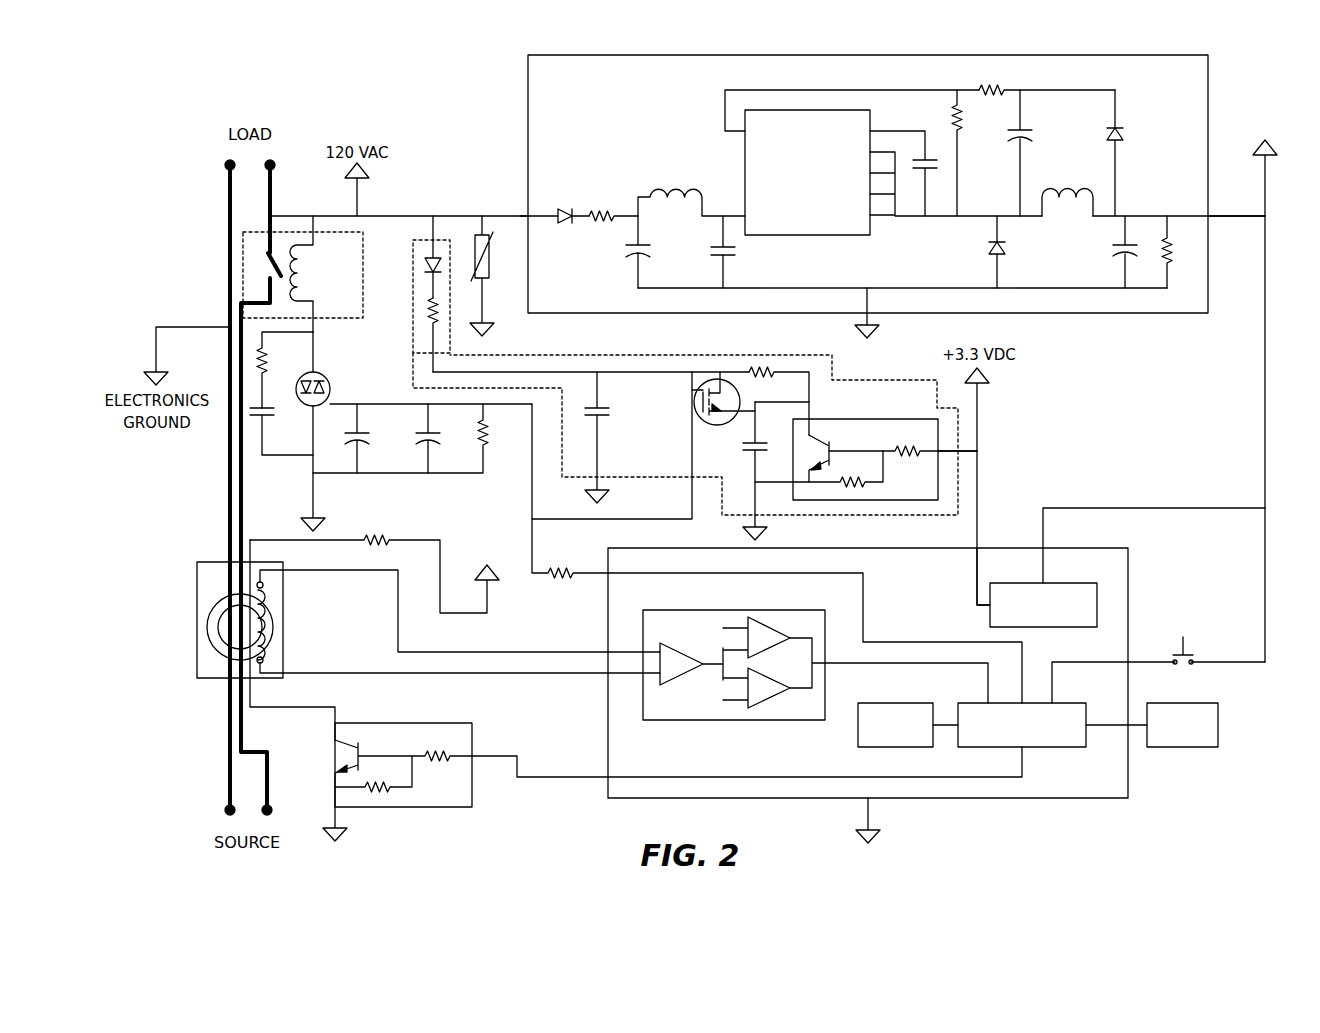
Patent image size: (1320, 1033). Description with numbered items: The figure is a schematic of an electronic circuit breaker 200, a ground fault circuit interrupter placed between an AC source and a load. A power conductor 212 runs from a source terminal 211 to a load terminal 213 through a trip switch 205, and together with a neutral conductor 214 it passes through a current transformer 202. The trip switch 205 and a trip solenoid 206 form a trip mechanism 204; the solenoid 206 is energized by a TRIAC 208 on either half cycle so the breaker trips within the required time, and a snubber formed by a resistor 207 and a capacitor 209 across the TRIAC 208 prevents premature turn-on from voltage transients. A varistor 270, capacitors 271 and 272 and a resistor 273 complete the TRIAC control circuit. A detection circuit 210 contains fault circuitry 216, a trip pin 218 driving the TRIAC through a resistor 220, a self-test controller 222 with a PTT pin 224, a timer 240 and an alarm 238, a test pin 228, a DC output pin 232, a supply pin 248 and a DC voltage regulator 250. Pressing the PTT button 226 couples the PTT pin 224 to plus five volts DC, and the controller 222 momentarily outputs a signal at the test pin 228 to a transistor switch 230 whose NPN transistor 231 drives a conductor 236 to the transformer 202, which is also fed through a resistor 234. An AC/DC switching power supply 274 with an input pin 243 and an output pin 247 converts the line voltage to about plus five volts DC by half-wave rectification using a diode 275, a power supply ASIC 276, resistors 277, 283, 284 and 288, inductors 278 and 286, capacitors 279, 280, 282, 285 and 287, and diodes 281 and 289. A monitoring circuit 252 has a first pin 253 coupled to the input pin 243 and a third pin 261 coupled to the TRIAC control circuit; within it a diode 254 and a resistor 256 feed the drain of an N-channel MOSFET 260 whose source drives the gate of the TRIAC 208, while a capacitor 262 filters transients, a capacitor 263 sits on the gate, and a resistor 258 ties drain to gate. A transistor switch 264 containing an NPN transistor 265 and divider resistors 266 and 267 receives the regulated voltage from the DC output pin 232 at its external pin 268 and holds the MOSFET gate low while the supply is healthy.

The electronic circuit breaker 200 is at (428, 90).
The current transformer 202 is at (285, 600).
The trip mechanism 204 is at (335, 320).
The trip switch 205 is at (268, 266).
The trip solenoid 206 is at (305, 270).
The resistor 207 is at (272, 370).
The TRIAC 208 is at (330, 378).
The capacitor 209 is at (275, 413).
The detection circuit 210 is at (608, 700).
The source terminal 211 is at (272, 810).
The power conductor 212 is at (243, 488).
The load terminal 213 is at (276, 166).
The neutral conductor 214 is at (229, 488).
The fault circuitry 216 is at (716, 610).
The trip pin 218 is at (608, 580).
The resistor 220 is at (566, 566).
The self-test controller 222 is at (1040, 747).
The PTT pin 224 is at (1126, 660).
The PTT button 226 is at (1178, 635).
The test pin 228 is at (608, 777).
The transistor switch 230 is at (376, 723).
The NPN transistor 231 is at (340, 760).
The DC output pin 232 is at (978, 550).
The resistor 234 is at (386, 538).
The conductor 236 is at (292, 712).
The alarm 238 is at (1160, 747).
The timer 240 is at (918, 703).
The input pin 243 is at (528, 214).
The output pin 247 is at (1210, 215).
The supply pin 248 is at (1044, 550).
The DC voltage regulator 250 is at (1097, 595).
The monitoring circuit 252 is at (853, 380).
The first pin 253 is at (435, 240).
The diode 254 is at (424, 260).
The resistor 256 is at (426, 305).
The resistor 258 is at (765, 368).
The N-channel MOSFET 260 is at (694, 405).
The third pin 261 is at (690, 480).
The capacitor 262 is at (607, 418).
The capacitor 263 is at (745, 450).
The transistor switch 264 is at (873, 419).
The NPN transistor 265 is at (815, 440).
The resistor 266 is at (905, 447).
The resistor 267 is at (868, 482).
The external pin 268 is at (945, 451).
The varistor 270 is at (489, 262).
The capacitor 271 is at (349, 462).
The capacitor 272 is at (419, 462).
The resistor 273 is at (494, 438).
The AC/DC switching power supply 274 is at (528, 143).
The diode 275 is at (563, 210).
The power supply ASIC 276 is at (745, 148).
The resistor 277 is at (608, 210).
The inductor 278 is at (700, 194).
The capacitor 279 is at (648, 248).
The capacitor 280 is at (737, 256).
The diode 281 is at (990, 250).
The capacitor 282 is at (945, 170).
The resistor 283 is at (951, 116).
The resistor 284 is at (1003, 88).
The capacitor 285 is at (1028, 128).
The inductor 286 is at (1090, 196).
The capacitor 287 is at (1113, 250).
The resistor 288 is at (1162, 248).
The diode 289 is at (1122, 130).